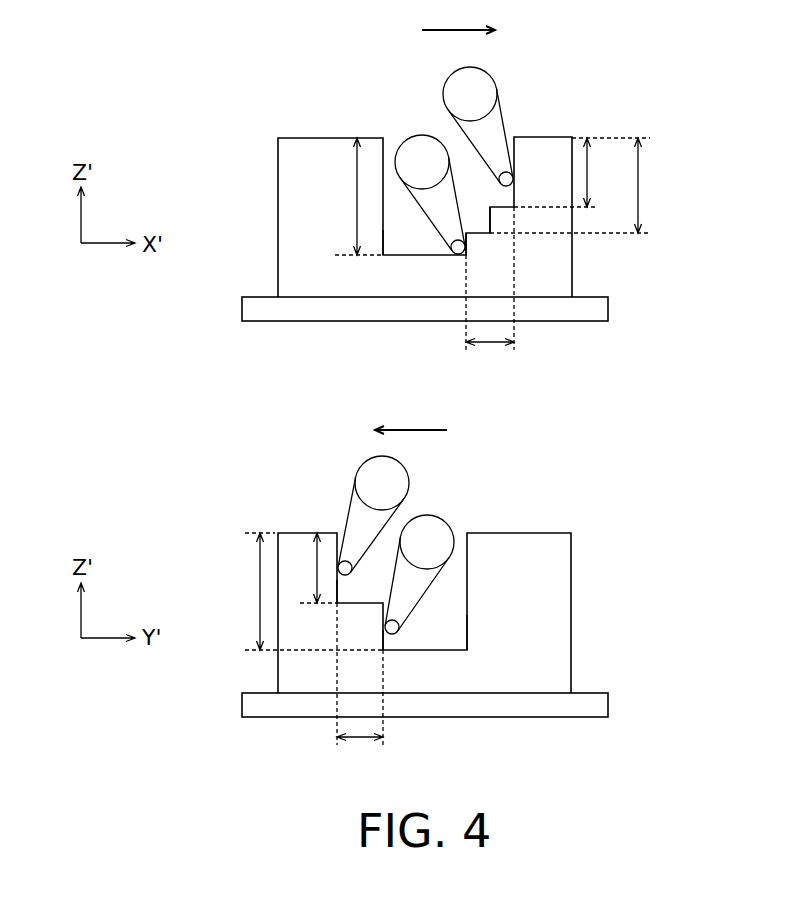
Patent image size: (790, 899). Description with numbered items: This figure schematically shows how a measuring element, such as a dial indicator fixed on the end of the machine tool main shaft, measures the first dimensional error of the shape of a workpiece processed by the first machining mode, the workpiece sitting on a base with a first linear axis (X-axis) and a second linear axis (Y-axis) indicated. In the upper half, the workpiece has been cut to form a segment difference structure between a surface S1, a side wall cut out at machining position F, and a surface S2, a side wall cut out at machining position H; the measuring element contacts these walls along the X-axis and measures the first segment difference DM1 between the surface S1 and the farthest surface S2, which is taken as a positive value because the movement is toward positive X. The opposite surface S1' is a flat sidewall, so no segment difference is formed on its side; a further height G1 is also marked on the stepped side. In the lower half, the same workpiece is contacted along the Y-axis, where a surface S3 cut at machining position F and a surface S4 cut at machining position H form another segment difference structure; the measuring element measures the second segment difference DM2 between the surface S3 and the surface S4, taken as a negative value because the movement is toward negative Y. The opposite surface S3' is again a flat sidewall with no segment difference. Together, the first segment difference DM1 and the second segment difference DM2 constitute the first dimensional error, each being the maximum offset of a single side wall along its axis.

The surface S1 is at (551, 265).
The surface S1' is at (402, 291).
The surface S2 is at (500, 209).
The surface S3 is at (404, 692).
The surface S3' is at (460, 693).
The surface S4 is at (337, 590).
The gap height dimension G1 is at (582, 185).
The first segment difference DM1 is at (490, 294).
The second segment difference DM2 is at (360, 689).